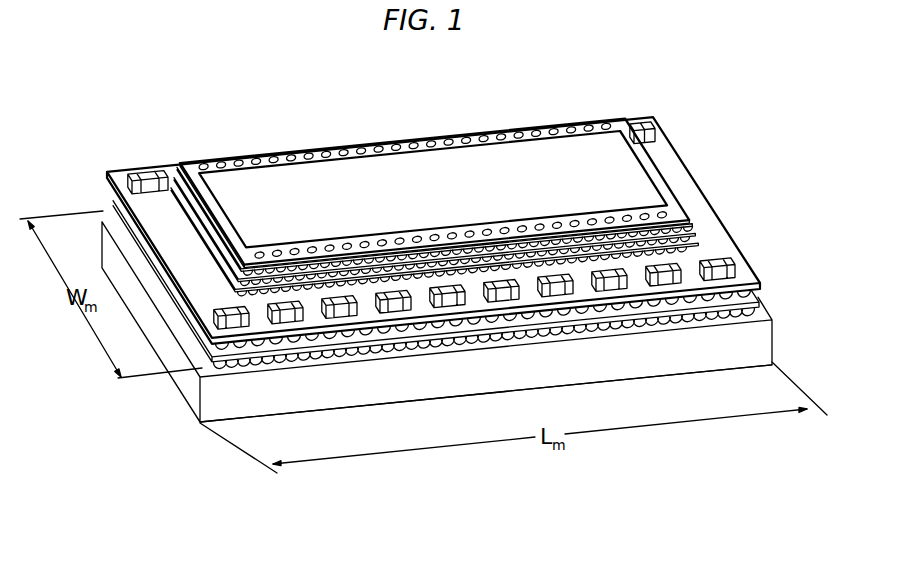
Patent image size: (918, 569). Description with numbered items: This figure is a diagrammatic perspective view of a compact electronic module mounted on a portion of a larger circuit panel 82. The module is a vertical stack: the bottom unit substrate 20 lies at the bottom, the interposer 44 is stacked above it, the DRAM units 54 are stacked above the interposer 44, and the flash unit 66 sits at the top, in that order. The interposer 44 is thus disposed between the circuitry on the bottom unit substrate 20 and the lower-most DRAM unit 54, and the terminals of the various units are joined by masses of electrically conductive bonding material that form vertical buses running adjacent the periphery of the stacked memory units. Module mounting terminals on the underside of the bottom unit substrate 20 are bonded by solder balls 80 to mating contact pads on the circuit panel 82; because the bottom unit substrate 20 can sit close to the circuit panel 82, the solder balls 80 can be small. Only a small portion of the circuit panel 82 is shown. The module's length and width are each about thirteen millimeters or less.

The bottom unit substrate 20 is at (140, 251).
The interposer 44 is at (117, 200).
The DRAM units 54 is at (204, 242).
The flash unit 66 is at (181, 162).
The solder balls 80 is at (370, 357).
The circuit panel 82 is at (650, 365).